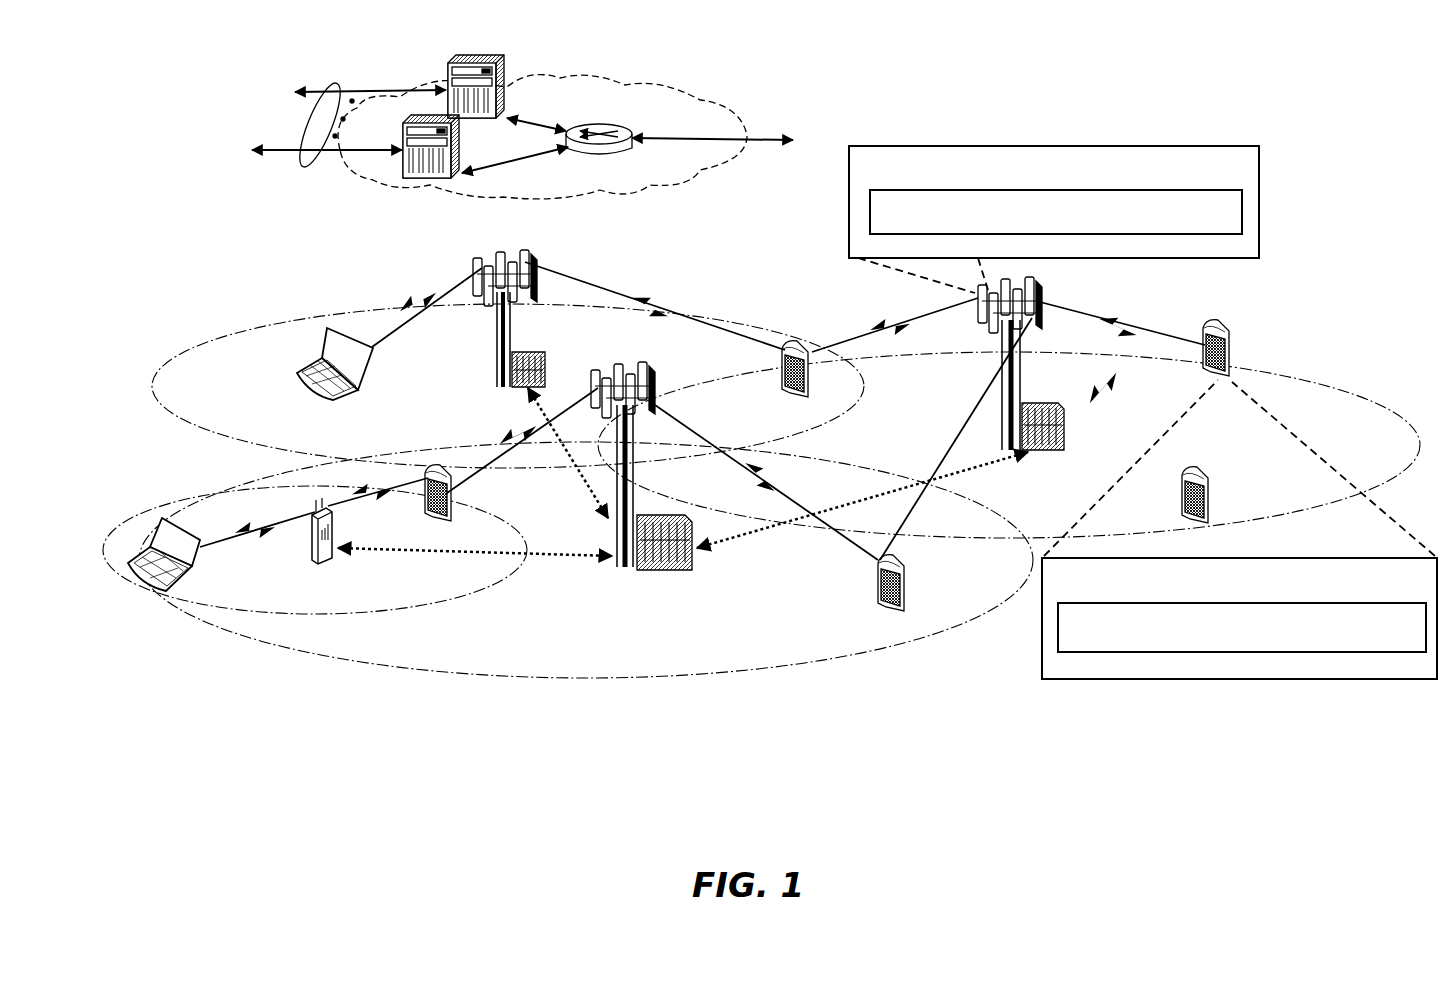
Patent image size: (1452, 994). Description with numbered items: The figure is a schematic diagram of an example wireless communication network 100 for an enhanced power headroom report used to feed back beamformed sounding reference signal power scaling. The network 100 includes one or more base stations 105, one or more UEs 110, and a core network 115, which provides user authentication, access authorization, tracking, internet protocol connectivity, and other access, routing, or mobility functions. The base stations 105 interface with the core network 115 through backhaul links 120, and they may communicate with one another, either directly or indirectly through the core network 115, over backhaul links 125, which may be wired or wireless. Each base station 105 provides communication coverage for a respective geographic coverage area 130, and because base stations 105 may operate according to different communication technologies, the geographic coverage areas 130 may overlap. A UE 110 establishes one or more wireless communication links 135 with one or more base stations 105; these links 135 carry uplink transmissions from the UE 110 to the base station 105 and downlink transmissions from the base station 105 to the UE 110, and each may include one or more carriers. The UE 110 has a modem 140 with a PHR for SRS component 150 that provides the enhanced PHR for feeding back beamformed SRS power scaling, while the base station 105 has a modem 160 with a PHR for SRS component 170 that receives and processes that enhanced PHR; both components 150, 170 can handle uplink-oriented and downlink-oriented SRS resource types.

The wireless communication network 100 is at (134, 98).
The base station 105 is at (499, 350).
The user equipment (UE) 110 is at (355, 390).
The core network 115 is at (633, 192).
The backhaul links 120 is at (310, 150).
The backhaul links 125 is at (425, 552).
The geographic coverage area 130 is at (212, 437).
The wireless communication links 135 is at (416, 300).
The modem 140 is at (1239, 529).
The PHR for SRS component 150 is at (1242, 627).
The modem 160 is at (1054, 219).
The PHR for SRS component 170 is at (1056, 212).